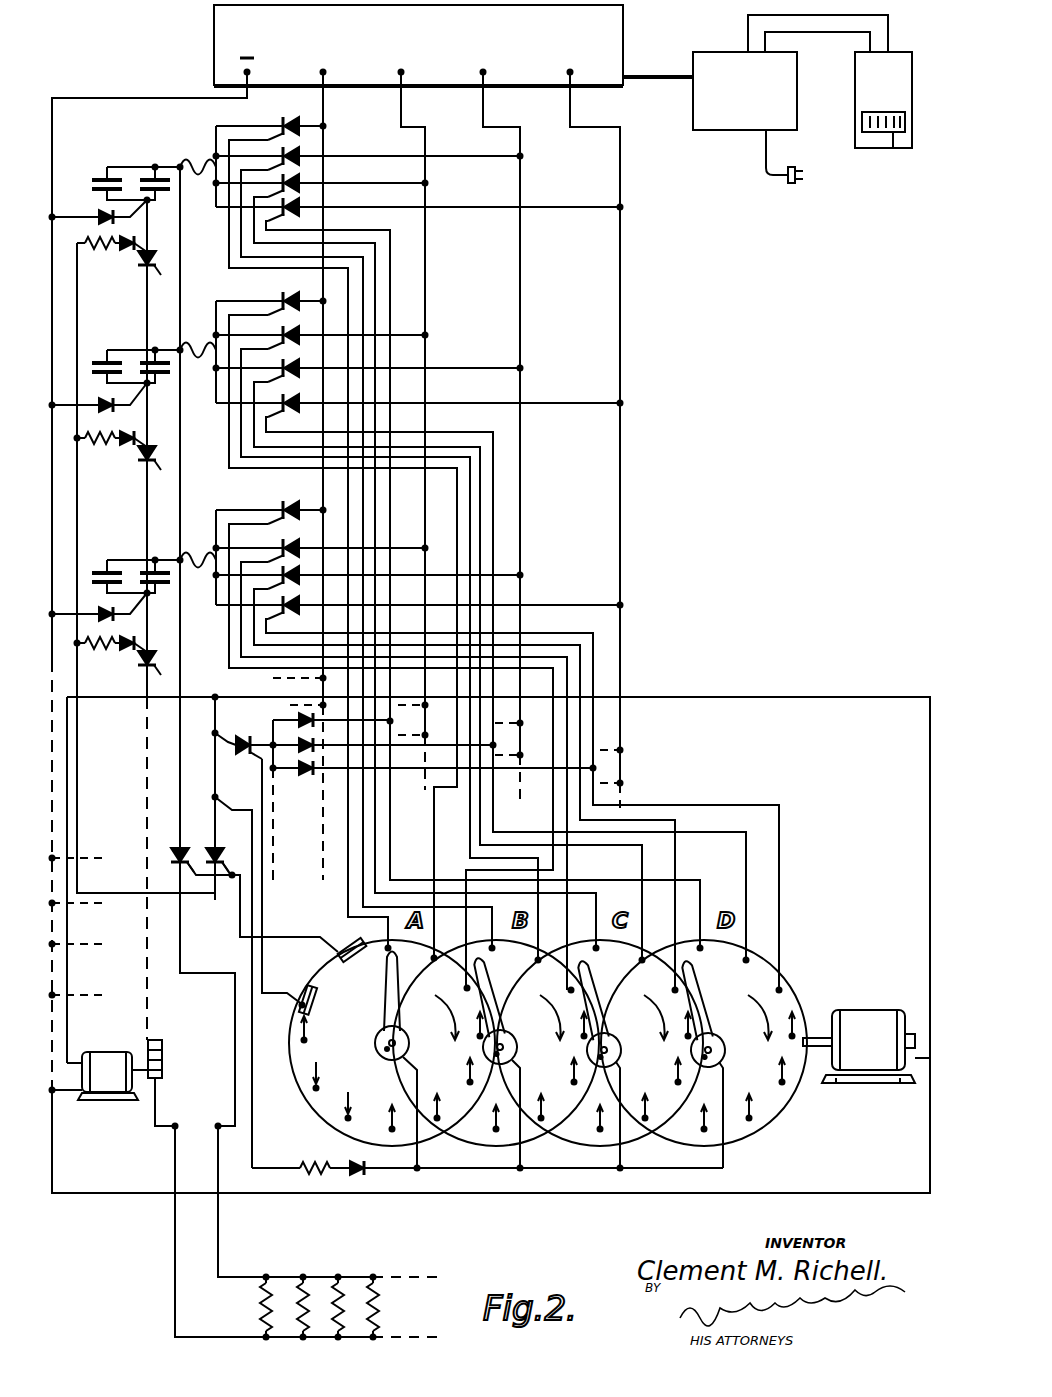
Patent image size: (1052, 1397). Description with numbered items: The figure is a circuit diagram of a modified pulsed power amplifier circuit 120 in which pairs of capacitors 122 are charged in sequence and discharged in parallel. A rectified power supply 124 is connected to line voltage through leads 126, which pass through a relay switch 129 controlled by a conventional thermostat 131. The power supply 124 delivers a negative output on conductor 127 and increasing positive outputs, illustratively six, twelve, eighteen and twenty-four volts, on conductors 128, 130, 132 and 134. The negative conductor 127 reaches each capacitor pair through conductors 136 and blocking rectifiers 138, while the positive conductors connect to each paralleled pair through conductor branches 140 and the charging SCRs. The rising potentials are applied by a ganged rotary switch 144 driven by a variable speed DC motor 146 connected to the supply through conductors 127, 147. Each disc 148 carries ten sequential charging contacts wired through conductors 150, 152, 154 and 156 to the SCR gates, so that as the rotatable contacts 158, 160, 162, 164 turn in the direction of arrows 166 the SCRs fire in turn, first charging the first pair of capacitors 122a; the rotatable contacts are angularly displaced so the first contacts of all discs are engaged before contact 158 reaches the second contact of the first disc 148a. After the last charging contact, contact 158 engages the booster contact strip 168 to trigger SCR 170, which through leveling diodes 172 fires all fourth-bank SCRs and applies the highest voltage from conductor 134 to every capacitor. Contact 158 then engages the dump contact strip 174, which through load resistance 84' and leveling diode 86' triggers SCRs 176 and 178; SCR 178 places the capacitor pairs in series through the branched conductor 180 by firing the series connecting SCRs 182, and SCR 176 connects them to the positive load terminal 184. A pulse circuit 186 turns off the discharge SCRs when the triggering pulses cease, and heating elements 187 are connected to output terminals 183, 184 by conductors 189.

The pulsed power amplifier circuit 120 is at (727, 34).
The capacitors 122 is at (122, 360).
The first pair of capacitors 122a is at (122, 178).
The rectified power supply 124 is at (616, 34).
The input leads 126 is at (665, 80).
The negative conductor 127 is at (148, 102).
The positive output conductor 128 is at (325, 220).
The relay switch 129 is at (722, 132).
The positive output conductor 130 is at (427, 228).
The thermostat 131 is at (855, 112).
The positive output conductor 132 is at (522, 230).
The positive output conductor 134 is at (622, 236).
The conductors 136 is at (56, 215).
The blocking rectifiers 138 is at (98, 223).
The conductor branches 140 is at (238, 142).
The ganged rotary switch 144 is at (540, 1172).
The variable speed DC motor 146 is at (866, 1024).
The conductor 147 is at (491, 945).
The discs 148 is at (470, 1140).
The first disc 148a is at (318, 1100).
The conductors 150 is at (388, 936).
The conductors 152 is at (556, 934).
The conductors 154 is at (661, 924).
The conductors 156 is at (766, 911).
The rotatable switch contact 158 is at (382, 1003).
The rotatable switch contact 160 is at (522, 1050).
The rotatable switch contact 162 is at (626, 1050).
The rotatable switch contact 164 is at (730, 1055).
The arrows 166 is at (612, 1017).
The booster contact strip 168 is at (302, 998).
The booster SCR 170 is at (246, 752).
The leveling diodes 172 is at (280, 730).
The dump contact strip 174 is at (336, 952).
The discharge SCR 176 is at (176, 862).
The discharge SCR 178 is at (238, 840).
The branched conductor 180 is at (92, 448).
The series connecting SCRs 182 is at (140, 262).
The output terminal 183 is at (172, 1130).
The positive load terminal 184 is at (218, 1126).
The pulse circuit 186 is at (140, 1056).
The heating elements 187 is at (381, 1294).
The conductors 189 is at (222, 1276).
The load resistance 84' is at (300, 1156).
The leveling diode 86' is at (379, 1179).